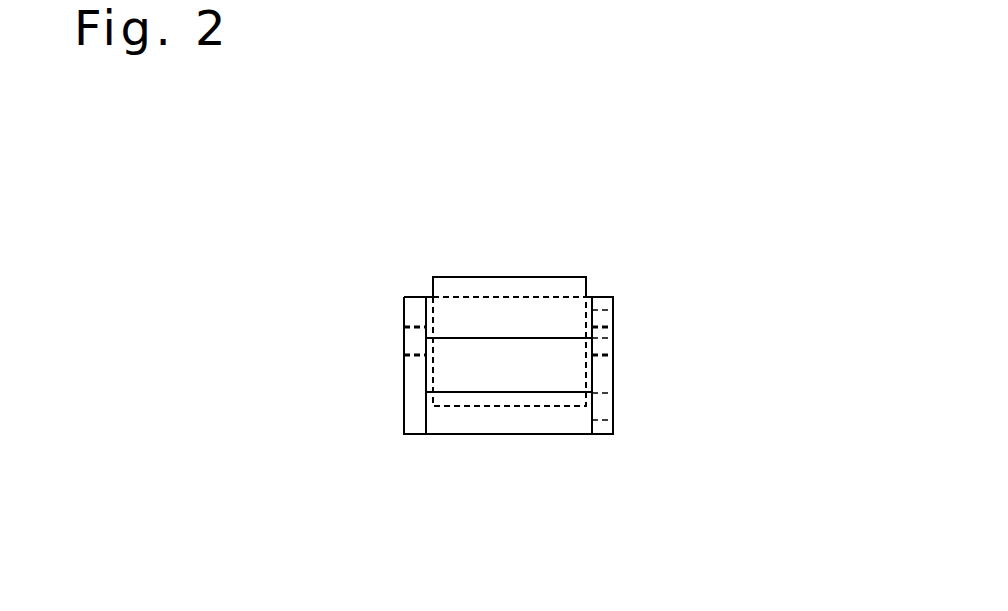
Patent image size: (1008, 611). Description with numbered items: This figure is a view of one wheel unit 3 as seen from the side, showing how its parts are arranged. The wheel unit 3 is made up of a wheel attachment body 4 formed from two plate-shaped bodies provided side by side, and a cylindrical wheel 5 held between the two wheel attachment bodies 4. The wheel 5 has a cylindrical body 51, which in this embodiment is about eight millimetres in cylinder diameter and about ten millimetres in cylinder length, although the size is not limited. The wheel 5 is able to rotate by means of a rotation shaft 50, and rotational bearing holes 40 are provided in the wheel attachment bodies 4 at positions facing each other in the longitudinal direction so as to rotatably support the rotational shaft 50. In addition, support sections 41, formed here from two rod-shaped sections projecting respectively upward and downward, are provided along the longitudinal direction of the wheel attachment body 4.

The wheel unit 3 is at (718, 327).
The wheel attachment body 4 is at (404, 389).
The wheel 5 is at (650, 185).
The rotational bearing hole 40 is at (416, 344).
The support section 41 is at (468, 307).
The rotation shaft 50 is at (432, 328).
The cylindrical body 51 is at (513, 277).